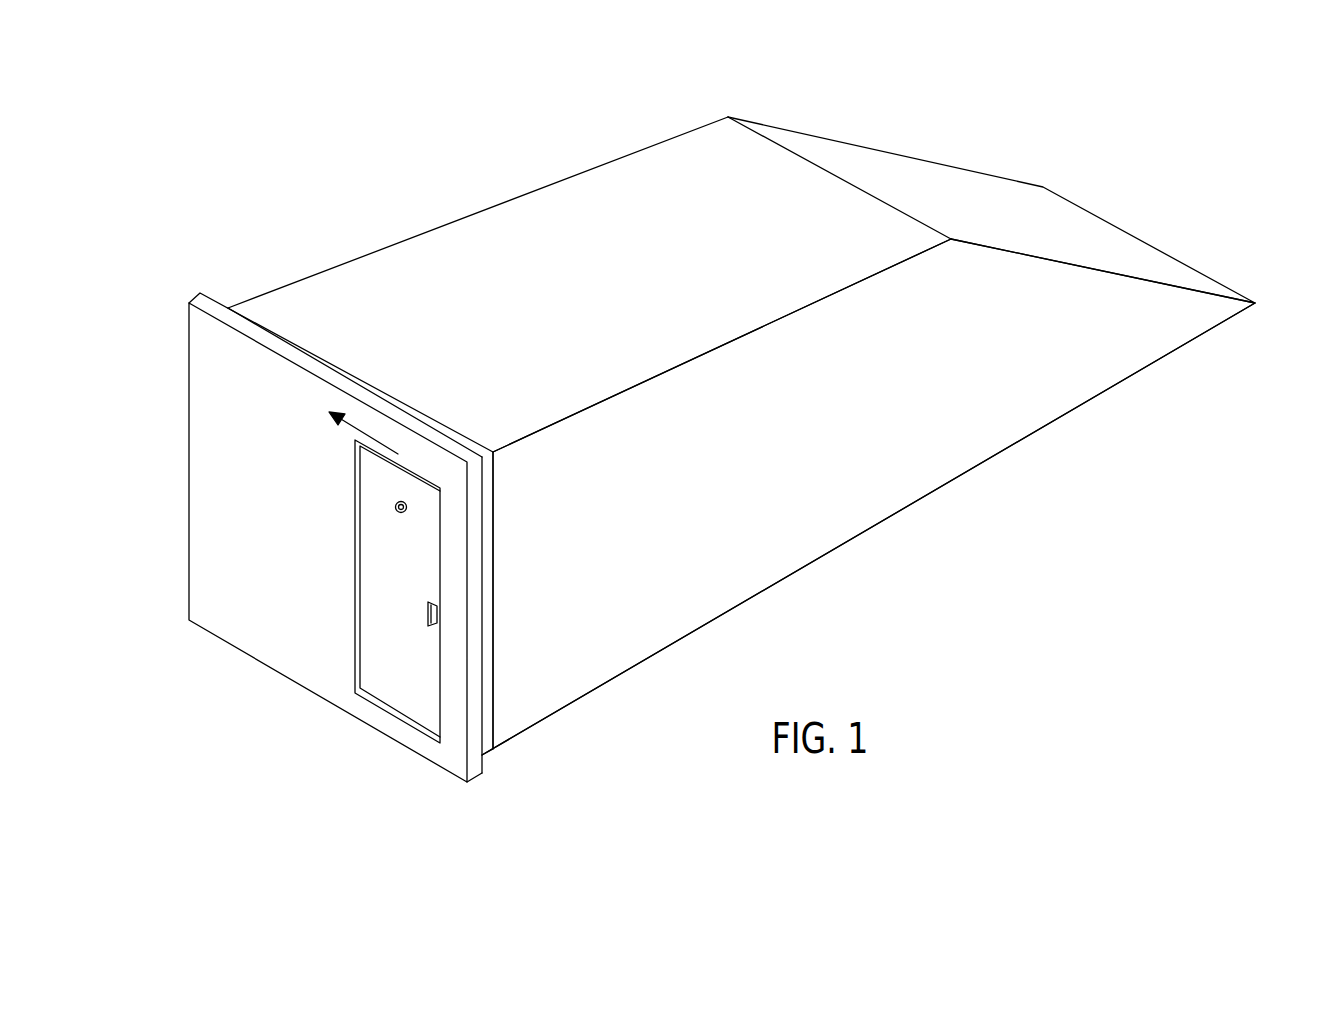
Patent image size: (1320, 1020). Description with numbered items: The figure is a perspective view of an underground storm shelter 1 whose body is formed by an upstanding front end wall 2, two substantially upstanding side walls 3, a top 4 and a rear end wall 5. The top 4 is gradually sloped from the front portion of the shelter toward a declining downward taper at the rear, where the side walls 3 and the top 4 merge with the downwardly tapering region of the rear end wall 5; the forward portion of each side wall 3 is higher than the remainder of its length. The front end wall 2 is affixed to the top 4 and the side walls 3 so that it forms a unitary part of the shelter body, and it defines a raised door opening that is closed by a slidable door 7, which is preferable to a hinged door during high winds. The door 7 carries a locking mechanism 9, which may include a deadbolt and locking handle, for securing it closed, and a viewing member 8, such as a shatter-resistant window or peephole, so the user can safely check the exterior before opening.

The underground storm shelter 1 is at (372, 168).
The front end wall 2 is at (208, 431).
The side walls 3 is at (1042, 403).
The top 4 is at (337, 283).
The rear end wall 5 is at (1079, 219).
The slidable door 7 is at (413, 703).
The viewing member 8 is at (395, 507).
The locking mechanism 9 is at (427, 613).